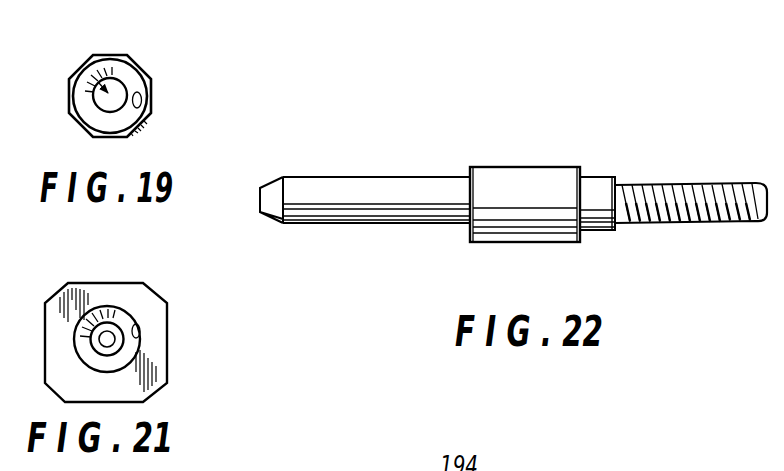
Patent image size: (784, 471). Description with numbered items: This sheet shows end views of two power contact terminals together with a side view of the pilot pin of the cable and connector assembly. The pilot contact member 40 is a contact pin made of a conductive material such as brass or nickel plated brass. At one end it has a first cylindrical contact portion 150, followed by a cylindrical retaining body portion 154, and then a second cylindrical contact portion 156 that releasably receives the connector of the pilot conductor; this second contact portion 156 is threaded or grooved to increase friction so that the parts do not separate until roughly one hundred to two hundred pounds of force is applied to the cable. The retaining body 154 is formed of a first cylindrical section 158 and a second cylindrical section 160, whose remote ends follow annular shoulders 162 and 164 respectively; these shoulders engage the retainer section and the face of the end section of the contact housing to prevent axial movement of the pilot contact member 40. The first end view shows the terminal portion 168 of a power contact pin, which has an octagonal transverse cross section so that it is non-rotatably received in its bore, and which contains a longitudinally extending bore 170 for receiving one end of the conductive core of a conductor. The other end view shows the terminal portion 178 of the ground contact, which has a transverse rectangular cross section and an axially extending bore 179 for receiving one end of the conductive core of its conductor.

In FIG. 22, the pilot contact member 40 is at (489, 141).
In FIG. 22, the first cylindrical contact portion 150 is at (350, 177).
In FIG. 22, the cylindrical retaining body portion 154 is at (522, 167).
In FIG. 22, the second cylindrical contact portion 156 is at (670, 186).
In FIG. 22, the first cylindrical section 158 is at (520, 242).
In FIG. 22, the second cylindrical section 160 is at (598, 230).
In FIG. 22, the annular shoulder 162 is at (467, 236).
In FIG. 22, the annular shoulder 164 is at (617, 223).
In FIG. 19, the terminal portion 168 is at (150, 65).
In FIG. 19, the longitudinally extending bore 170 is at (141, 97).
In FIG. 21, the terminal portion 178 is at (117, 283).
In FIG. 21, the axially extending bore 179 is at (138, 328).